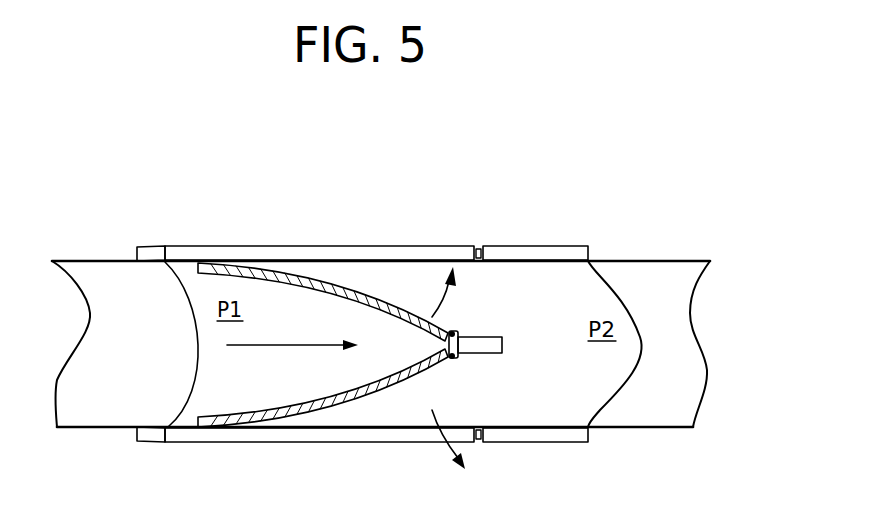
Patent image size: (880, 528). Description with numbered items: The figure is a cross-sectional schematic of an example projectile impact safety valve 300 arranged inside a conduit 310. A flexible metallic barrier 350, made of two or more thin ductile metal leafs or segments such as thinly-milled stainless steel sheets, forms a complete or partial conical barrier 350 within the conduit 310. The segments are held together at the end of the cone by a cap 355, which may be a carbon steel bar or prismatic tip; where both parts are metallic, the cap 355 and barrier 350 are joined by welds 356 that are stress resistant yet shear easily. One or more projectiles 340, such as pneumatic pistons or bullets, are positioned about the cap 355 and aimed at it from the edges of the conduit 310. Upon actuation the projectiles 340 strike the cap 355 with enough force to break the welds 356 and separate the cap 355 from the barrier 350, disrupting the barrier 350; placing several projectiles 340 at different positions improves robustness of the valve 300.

The projectile impact safety valve 300 is at (145, 210).
The conduit 310 is at (100, 428).
The projectile 340 is at (478, 263).
The flexible metallic barrier 350 is at (373, 308).
The cap 355 is at (502, 345).
The welds 356 is at (470, 352).